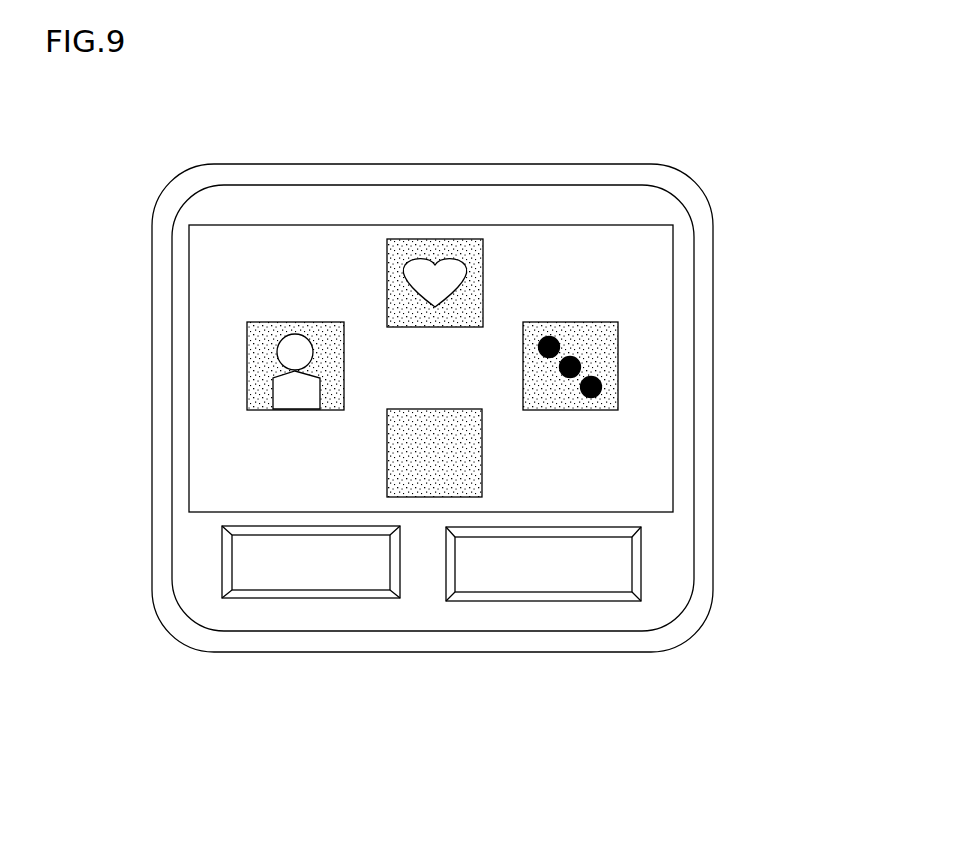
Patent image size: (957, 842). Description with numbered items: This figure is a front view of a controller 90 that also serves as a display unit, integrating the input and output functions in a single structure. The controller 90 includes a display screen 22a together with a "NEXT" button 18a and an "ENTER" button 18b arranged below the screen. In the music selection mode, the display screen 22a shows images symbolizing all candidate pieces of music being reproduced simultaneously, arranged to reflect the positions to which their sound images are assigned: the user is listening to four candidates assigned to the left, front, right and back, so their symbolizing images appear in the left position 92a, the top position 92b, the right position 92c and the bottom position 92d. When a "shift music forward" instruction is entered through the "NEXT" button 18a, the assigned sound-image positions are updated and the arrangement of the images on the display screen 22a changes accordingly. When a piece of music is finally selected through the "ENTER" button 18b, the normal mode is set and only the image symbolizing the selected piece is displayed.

The controller 90 is at (713, 508).
The display screen 22a is at (672, 282).
The image in the left position 92a is at (245, 348).
The image in the top position 92b is at (435, 238).
The image in the right position 92c is at (617, 367).
The image in the bottom position 92d is at (387, 462).
The "NEXT" button 18a is at (307, 600).
The "ENTER" button 18b is at (535, 602).